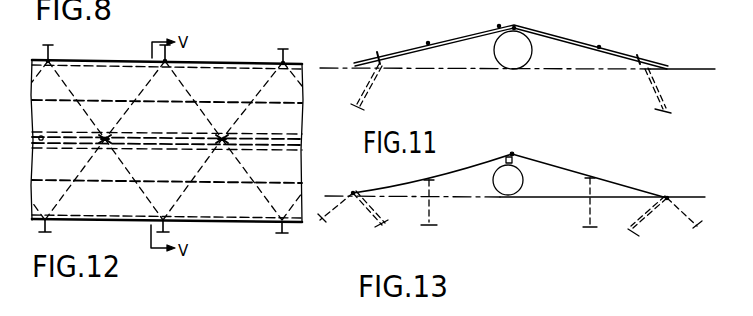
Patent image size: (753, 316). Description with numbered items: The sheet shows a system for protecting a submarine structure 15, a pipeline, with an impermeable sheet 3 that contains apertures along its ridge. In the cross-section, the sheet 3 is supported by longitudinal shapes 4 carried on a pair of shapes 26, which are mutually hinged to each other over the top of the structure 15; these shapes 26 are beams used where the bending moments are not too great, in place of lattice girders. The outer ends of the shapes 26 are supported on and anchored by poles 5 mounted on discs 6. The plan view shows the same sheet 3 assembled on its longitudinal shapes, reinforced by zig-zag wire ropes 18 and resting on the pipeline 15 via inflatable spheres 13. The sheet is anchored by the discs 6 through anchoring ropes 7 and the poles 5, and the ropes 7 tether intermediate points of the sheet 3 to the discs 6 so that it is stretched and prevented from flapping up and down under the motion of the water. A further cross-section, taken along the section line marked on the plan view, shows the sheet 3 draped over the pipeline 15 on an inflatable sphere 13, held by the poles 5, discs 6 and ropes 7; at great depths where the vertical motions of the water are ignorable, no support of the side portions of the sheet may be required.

In FIG. 12, the impermeable sheet 3 is at (209, 72).
In FIG. 11, the impermeable sheet 3 is at (567, 41).
In FIG. 13, the impermeable sheet 3 is at (565, 164).
In FIG. 12, the longitudinal shapes 4 is at (235, 102).
In FIG. 11, the longitudinal shapes 4 is at (527, 17).
In FIG. 13, the longitudinal shapes 4 is at (512, 155).
In FIG. 11, the poles 5 is at (644, 79).
In FIG. 13, the poles 5 is at (650, 212).
In FIG. 12, the discs 6 is at (283, 49).
In FIG. 11, the discs 6 is at (660, 108).
In FIG. 13, the discs 6 is at (589, 228).
In FIG. 12, the anchoring ropes 7 is at (286, 62).
In FIG. 13, the anchoring ropes 7 is at (588, 217).
In FIG. 12, the inflatable spheres 13 is at (165, 143).
In FIG. 13, the inflatable spheres 13 is at (517, 162).
In FIG. 12, the structure 15 is at (189, 135).
In FIG. 11, the structure 15 is at (520, 66).
In FIG. 13, the structure 15 is at (520, 195).
In FIG. 12, the zig-zag wire ropes 18 is at (217, 137).
In FIG. 11, the shapes 26 is at (584, 50).